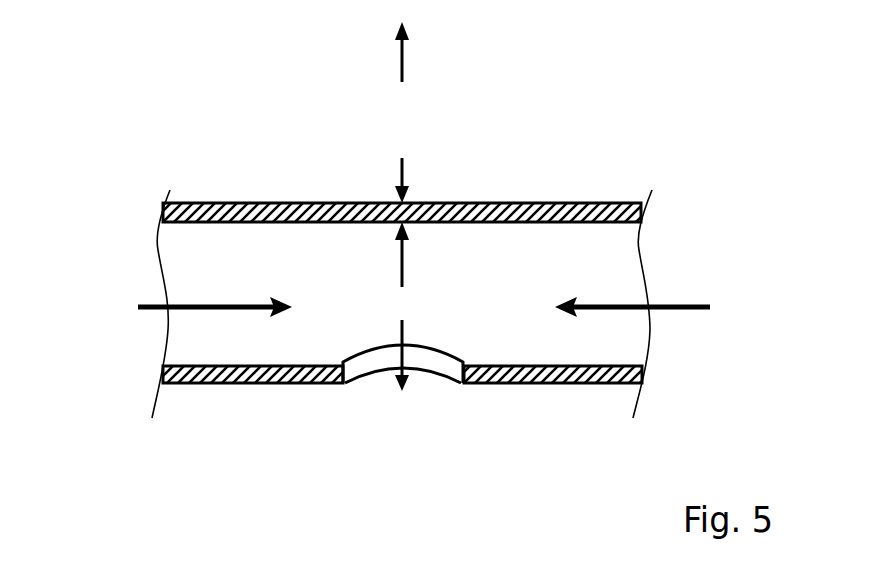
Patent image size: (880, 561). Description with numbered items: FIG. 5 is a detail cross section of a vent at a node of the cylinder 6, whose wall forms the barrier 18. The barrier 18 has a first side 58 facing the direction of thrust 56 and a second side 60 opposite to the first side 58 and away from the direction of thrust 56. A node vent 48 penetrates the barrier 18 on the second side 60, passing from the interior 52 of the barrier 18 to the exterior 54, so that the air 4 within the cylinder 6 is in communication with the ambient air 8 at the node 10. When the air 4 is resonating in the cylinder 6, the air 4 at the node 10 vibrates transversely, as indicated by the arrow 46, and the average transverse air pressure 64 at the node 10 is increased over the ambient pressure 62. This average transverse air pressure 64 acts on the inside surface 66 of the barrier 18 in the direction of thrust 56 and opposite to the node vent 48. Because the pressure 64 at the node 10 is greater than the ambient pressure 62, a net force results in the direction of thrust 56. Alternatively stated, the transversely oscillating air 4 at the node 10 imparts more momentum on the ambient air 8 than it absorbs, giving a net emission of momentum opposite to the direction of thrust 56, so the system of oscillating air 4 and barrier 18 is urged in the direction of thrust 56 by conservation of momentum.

The air 4 is at (318, 267).
The cylinder 6 is at (445, 293).
The ambient air 8 is at (298, 469).
The node 10 is at (393, 300).
The barrier 18 is at (445, 293).
The arrow 46 is at (397, 353).
The node vent 48 is at (433, 358).
The interior 52 is at (445, 238).
The exterior 54 is at (402, 408).
The direction of thrust 56 is at (400, 52).
The first side 58 is at (445, 204).
The second side 60 is at (533, 385).
The ambient pressure 62 is at (405, 172).
The average transverse air pressure 64 is at (403, 263).
The inside surface 66 is at (560, 223).